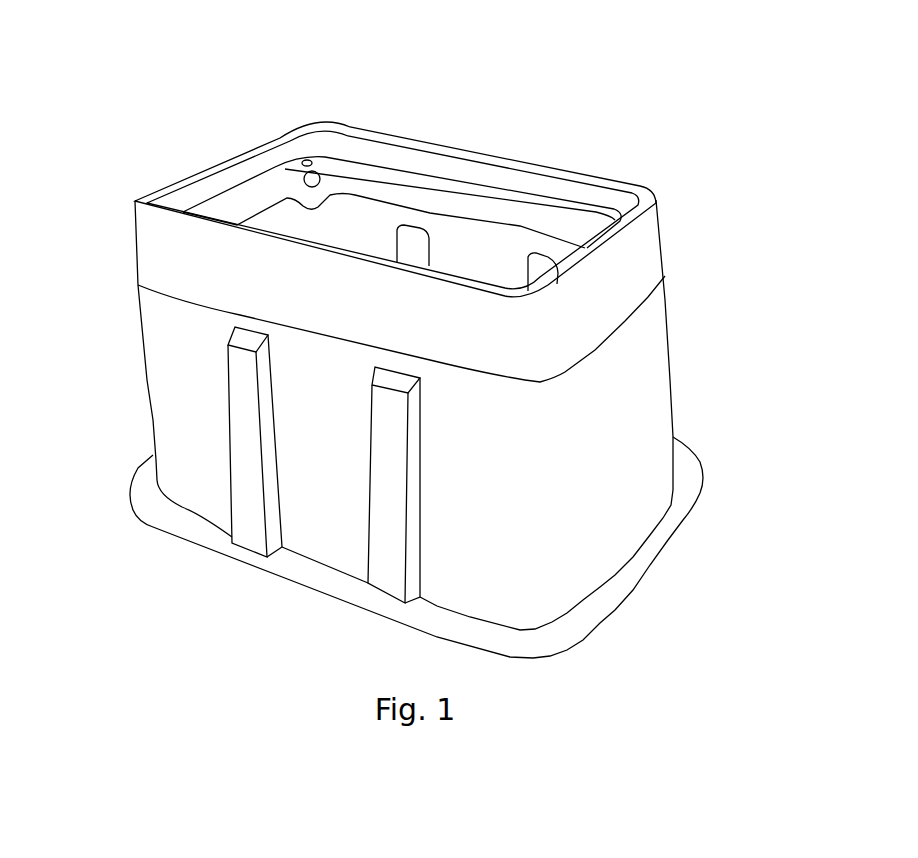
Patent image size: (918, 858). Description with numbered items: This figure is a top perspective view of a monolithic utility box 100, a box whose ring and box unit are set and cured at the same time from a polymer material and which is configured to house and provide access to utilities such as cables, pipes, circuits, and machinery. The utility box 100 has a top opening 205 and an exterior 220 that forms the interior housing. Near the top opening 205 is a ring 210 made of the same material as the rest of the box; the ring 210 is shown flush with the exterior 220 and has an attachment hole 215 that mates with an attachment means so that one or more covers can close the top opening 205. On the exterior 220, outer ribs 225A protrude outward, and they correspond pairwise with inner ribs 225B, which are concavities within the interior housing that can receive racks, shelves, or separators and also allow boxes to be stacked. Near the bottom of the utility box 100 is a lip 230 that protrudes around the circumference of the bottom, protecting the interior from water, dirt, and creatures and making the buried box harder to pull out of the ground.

The monolithic utility box 100 is at (480, 17).
The top opening 205 is at (560, 160).
The ring 210 is at (157, 252).
The attachment hole 215 is at (333, 175).
The exterior 220 is at (185, 397).
The outer ribs 225A is at (393, 542).
The inner ribs 225B is at (412, 238).
The lip 230 is at (683, 472).